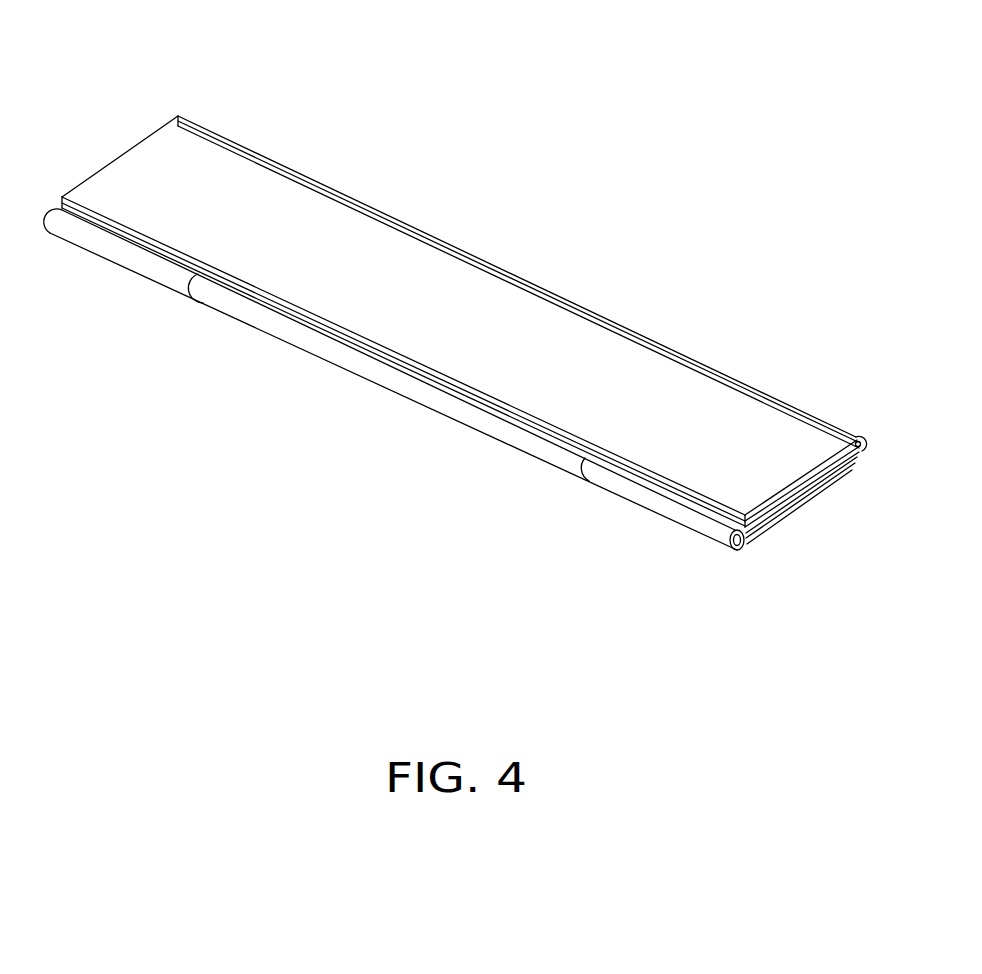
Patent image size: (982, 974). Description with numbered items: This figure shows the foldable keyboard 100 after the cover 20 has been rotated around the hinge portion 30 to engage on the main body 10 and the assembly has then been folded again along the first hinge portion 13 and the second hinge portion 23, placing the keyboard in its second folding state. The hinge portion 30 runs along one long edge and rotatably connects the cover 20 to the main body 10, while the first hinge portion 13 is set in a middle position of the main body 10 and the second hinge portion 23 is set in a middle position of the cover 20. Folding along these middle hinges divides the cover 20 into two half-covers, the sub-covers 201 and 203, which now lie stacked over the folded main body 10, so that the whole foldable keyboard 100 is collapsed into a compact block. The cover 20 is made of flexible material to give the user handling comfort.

The foldable keyboard 100 is at (603, 50).
The cover 20 is at (292, 213).
The sub-cover 203 is at (152, 167).
The second hinge portion 23 is at (522, 277).
The first hinge portion 13 is at (855, 438).
The main body 10 is at (820, 480).
The sub-cover 201 is at (782, 512).
The hinge portion 30 is at (358, 363).